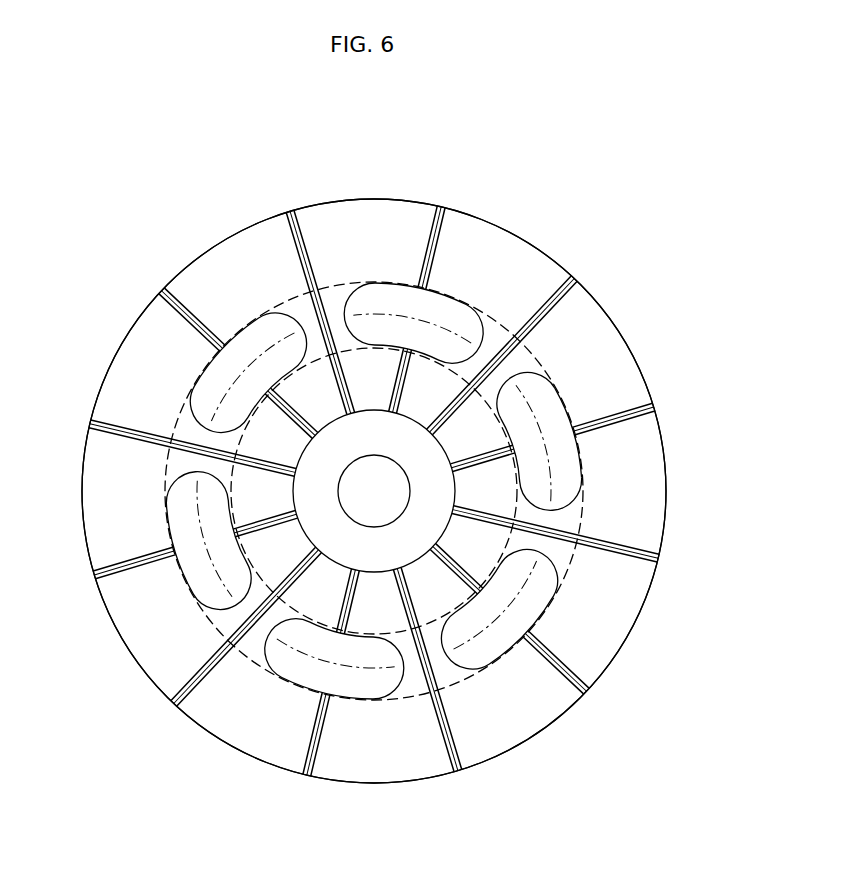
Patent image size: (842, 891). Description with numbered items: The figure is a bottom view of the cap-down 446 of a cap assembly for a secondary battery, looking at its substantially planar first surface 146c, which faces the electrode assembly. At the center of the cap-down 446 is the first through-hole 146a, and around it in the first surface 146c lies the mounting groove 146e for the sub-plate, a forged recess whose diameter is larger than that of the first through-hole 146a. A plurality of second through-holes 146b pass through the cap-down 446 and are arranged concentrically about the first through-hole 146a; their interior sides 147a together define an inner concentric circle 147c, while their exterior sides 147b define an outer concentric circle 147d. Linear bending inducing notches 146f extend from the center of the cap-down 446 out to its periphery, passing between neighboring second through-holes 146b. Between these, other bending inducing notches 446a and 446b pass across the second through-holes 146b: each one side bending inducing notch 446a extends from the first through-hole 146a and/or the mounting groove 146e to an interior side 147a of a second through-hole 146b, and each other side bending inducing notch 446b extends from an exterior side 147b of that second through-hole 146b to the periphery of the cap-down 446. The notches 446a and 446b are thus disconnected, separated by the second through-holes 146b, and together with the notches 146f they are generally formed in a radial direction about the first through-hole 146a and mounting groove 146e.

The cap-down 446 is at (106, 243).
The one side bending inducing notches 446a is at (393, 377).
The other side bending inducing notches 446b is at (430, 241).
The first through-hole 146a is at (393, 477).
The second through-holes 146b is at (568, 473).
The first surface 146c is at (547, 700).
The mounting groove 146e is at (358, 548).
The bending inducing notches 146f is at (540, 318).
The interior sides 147a is at (557, 382).
The exterior sides 147b is at (574, 442).
The inner concentric circle 147c is at (517, 512).
The outer concentric circle 147d is at (568, 565).